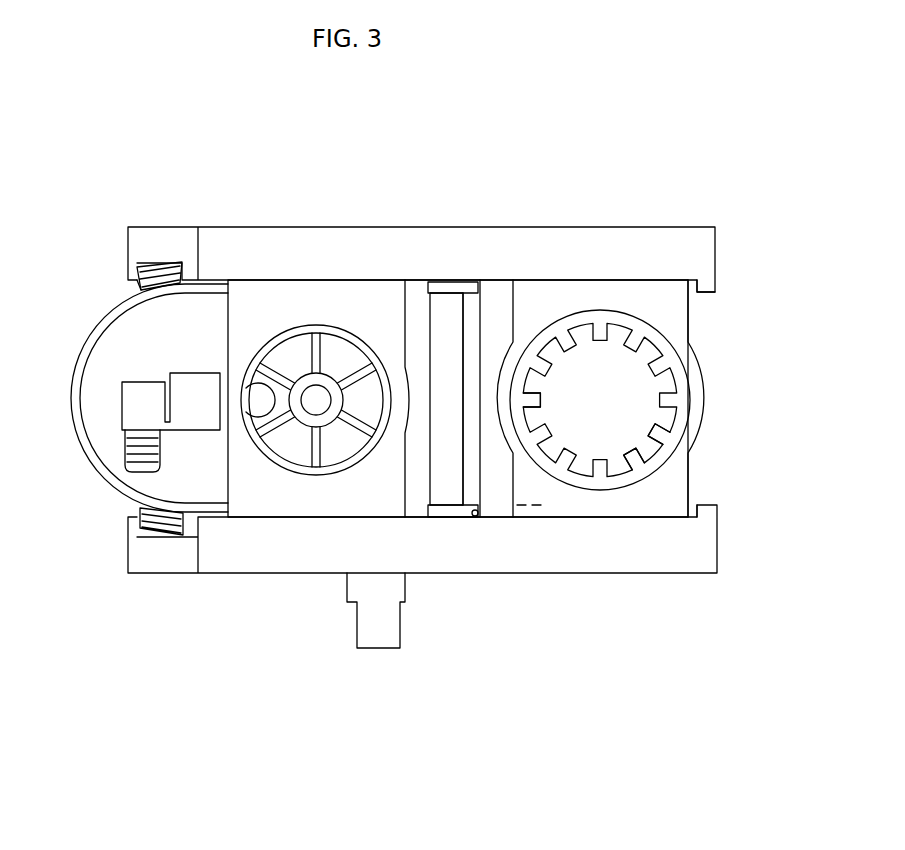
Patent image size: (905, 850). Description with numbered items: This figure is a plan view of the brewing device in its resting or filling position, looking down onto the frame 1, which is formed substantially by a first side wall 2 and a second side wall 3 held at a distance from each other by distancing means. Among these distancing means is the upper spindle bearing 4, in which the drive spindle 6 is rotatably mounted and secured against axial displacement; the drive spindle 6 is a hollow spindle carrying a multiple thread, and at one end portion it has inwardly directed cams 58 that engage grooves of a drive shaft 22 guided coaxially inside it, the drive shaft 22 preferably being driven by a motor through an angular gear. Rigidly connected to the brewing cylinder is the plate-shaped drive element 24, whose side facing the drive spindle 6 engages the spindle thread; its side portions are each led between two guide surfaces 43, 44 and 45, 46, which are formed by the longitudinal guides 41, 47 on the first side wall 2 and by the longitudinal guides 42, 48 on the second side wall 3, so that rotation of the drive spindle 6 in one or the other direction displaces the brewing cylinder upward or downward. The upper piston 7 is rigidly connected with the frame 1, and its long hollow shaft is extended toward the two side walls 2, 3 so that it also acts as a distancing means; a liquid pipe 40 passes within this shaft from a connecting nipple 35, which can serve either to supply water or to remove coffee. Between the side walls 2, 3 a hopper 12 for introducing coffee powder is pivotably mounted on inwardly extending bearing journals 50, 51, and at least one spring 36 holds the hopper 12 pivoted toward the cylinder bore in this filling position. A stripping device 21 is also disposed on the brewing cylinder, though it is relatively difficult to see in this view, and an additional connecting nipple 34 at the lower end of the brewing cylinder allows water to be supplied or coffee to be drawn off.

The frame 1 is at (704, 352).
The first side wall 2 is at (333, 252).
The second side wall 3 is at (623, 547).
The upper spindle bearing 4 is at (682, 433).
The drive spindle 6 is at (657, 455).
The upper piston 7 is at (278, 330).
The hopper 12 is at (98, 330).
The stripping device 21 is at (428, 300).
The drive shaft 22 is at (647, 413).
The drive element 24 is at (532, 403).
The connecting nipple 34 is at (372, 625).
The connecting nipple 35 is at (142, 397).
The spring 36 is at (155, 265).
The liquid pipe 40 is at (258, 403).
The longitudinal guide 41 is at (453, 287).
The longitudinal guide 42 is at (452, 513).
The guide surface 43 is at (468, 290).
The guide surface 44 is at (513, 282).
The guide surface 45 is at (473, 517).
The guide surface 46 is at (548, 505).
The longitudinal guide 47 is at (695, 277).
The longitudinal guide 48 is at (697, 520).
The bearing journal 50 is at (135, 289).
The bearing journal 51 is at (138, 510).
The cams 58 is at (633, 458).